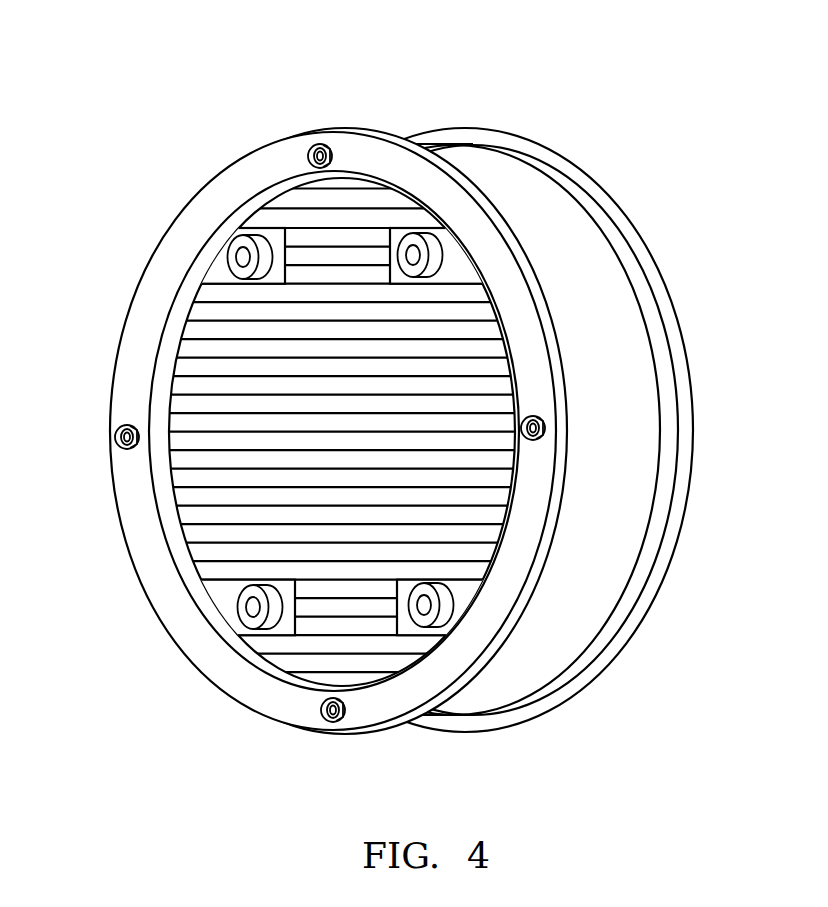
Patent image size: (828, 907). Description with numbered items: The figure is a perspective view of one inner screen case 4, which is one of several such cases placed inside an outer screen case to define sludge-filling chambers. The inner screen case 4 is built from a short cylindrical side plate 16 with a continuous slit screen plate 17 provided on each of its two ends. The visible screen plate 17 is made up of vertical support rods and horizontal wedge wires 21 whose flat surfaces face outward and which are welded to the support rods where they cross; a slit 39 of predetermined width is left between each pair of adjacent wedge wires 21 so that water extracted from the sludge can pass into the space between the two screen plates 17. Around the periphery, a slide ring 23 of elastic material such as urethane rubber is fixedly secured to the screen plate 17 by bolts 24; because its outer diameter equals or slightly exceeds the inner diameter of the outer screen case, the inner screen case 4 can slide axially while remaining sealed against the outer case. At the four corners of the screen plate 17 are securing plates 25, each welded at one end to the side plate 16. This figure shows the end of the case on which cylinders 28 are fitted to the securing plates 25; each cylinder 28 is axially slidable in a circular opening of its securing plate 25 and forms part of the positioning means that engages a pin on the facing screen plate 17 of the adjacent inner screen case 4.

The inner screen case 4 is at (613, 106).
The side plate 16 is at (604, 456).
The continuous slit screen plate 17 is at (291, 432).
The wedge wire 21 is at (291, 431).
The slide ring 23 is at (530, 358).
The bolt 24 is at (336, 720).
The securing plate 25 is at (217, 266).
The cylinder 28 is at (256, 235).
The slit 39 is at (250, 360).